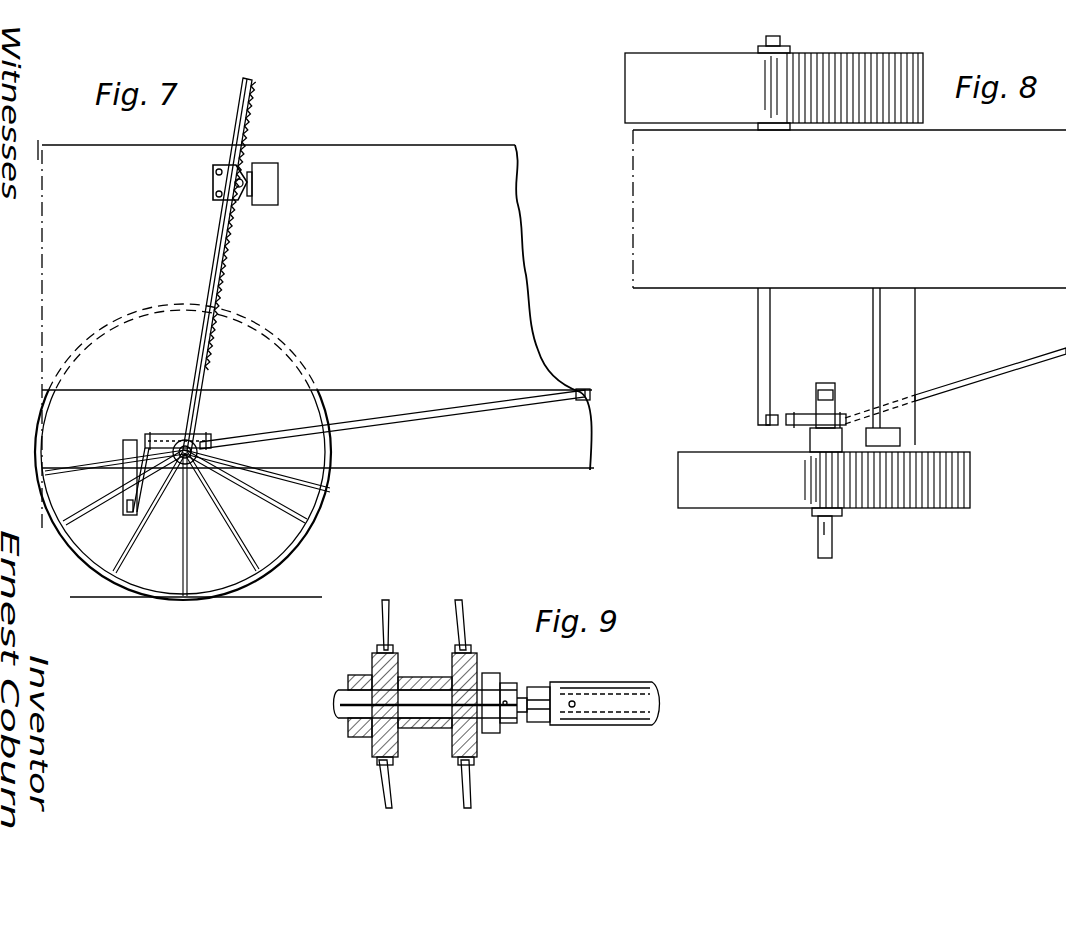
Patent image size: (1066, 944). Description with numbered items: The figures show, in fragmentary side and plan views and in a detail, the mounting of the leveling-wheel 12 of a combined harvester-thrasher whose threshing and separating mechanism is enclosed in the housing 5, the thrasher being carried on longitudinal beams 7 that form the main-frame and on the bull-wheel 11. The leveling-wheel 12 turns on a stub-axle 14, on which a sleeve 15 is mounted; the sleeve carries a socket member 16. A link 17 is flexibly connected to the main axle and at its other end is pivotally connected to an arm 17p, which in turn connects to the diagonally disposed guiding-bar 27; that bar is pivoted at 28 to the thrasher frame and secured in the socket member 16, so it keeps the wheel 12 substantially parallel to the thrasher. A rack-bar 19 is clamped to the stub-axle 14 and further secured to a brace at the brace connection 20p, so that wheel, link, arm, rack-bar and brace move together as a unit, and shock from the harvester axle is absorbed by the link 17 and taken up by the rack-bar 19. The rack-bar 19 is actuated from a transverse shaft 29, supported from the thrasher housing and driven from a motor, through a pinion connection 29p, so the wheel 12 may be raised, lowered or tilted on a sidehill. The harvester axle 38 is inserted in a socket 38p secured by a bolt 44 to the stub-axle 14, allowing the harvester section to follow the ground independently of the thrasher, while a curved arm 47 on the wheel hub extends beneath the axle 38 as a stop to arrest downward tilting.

In FIG. 7, the housing 5 is at (316, 335).
In FIG. 8, the housing 5 is at (849, 209).
In FIG. 7, the beams 7 is at (494, 448).
In FIG. 7, the bull-wheel 11 is at (322, 507).
In FIG. 8, the bull-wheel 11 is at (774, 83).
In FIG. 8, the leveling-wheel 12 is at (726, 498).
In FIG. 7, the stub-axle 14 is at (200, 456).
In FIG. 8, the stub-axle 14 is at (826, 390).
In FIG. 9, the stub-axle 14 is at (344, 708).
In FIG. 8, the sleeve 15 is at (816, 392).
In FIG. 7, the socket member 16 is at (218, 430).
In FIG. 8, the socket member 16 is at (812, 414).
In FIG. 7, the link 17 is at (126, 486).
In FIG. 8, the link 17 is at (758, 332).
In FIG. 7, the arm 17p is at (135, 462).
In FIG. 8, the arm 17p is at (775, 430).
In FIG. 7, the rack-bar 19 is at (218, 236).
In FIG. 7, the brace connection 20p is at (190, 372).
In FIG. 7, the guiding-bar 27 is at (438, 412).
In FIG. 8, the guiding-bar 27 is at (1002, 376).
In FIG. 7, the pivot 28 is at (582, 404).
In FIG. 8, the transverse shaft 29 is at (873, 325).
In FIG. 8, the pinion connection 29p is at (905, 436).
In FIG. 9, the axle 38 is at (650, 676).
In FIG. 9, the socket 38p is at (603, 682).
In FIG. 9, the bolt 44 is at (531, 722).
In FIG. 8, the curved arm 47 is at (833, 552).